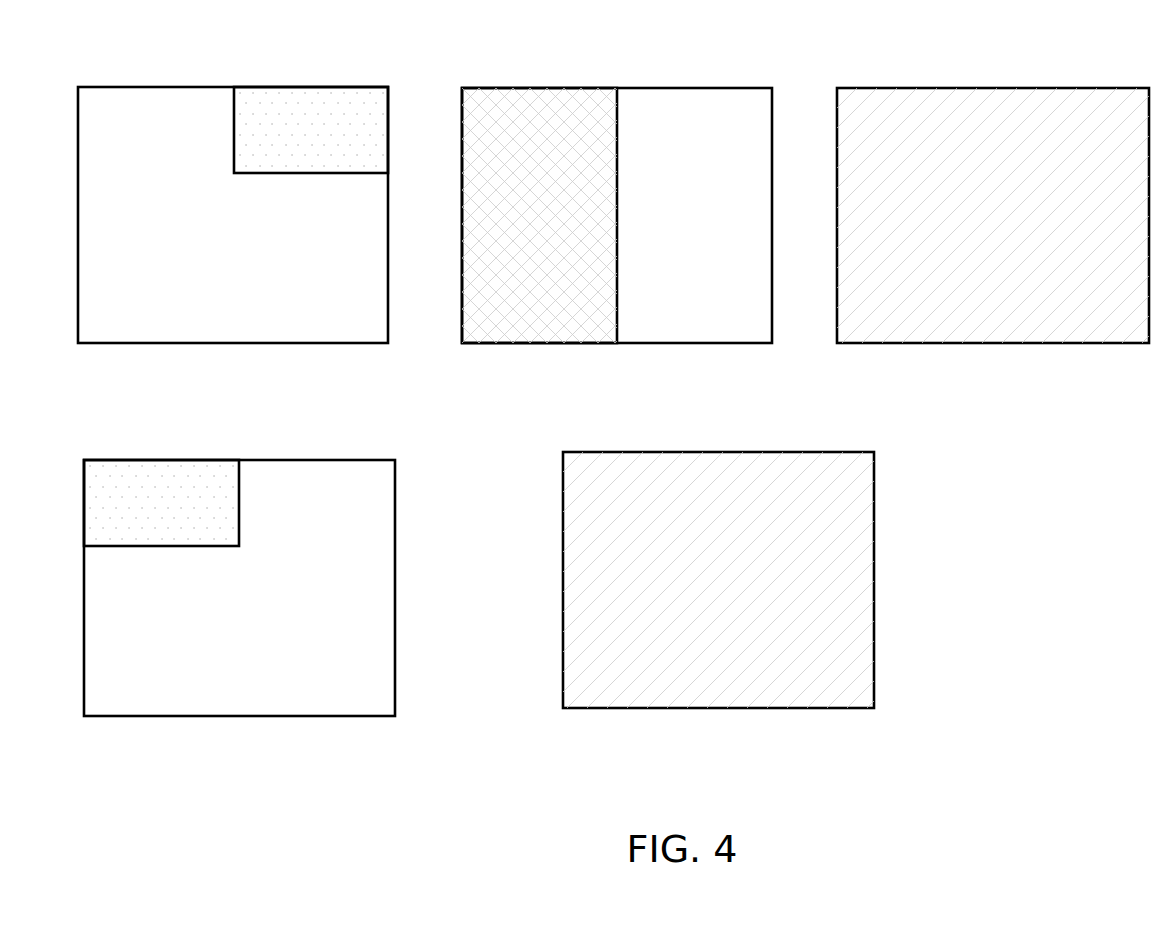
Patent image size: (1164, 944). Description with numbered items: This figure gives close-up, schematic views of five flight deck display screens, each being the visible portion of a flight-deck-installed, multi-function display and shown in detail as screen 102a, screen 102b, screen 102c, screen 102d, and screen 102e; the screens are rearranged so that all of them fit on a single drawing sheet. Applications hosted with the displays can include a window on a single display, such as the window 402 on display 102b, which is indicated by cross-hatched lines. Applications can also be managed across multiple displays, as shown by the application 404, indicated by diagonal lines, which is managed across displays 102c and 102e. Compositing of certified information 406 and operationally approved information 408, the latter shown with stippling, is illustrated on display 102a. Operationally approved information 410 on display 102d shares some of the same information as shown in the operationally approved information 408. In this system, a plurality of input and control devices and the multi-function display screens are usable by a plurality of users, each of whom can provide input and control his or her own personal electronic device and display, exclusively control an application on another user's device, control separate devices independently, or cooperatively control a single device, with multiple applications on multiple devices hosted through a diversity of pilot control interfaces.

The screen 102a is at (233, 187).
The screen 102b is at (617, 187).
The screen 102c is at (1058, 88).
The screen 102d is at (239, 559).
The screen 102e is at (785, 451).
The window 402 is at (535, 92).
The application 404 is at (935, 92).
The certified information 406 is at (190, 254).
The operationally approved information 408 is at (315, 92).
The operationally approved information 410 is at (132, 467).